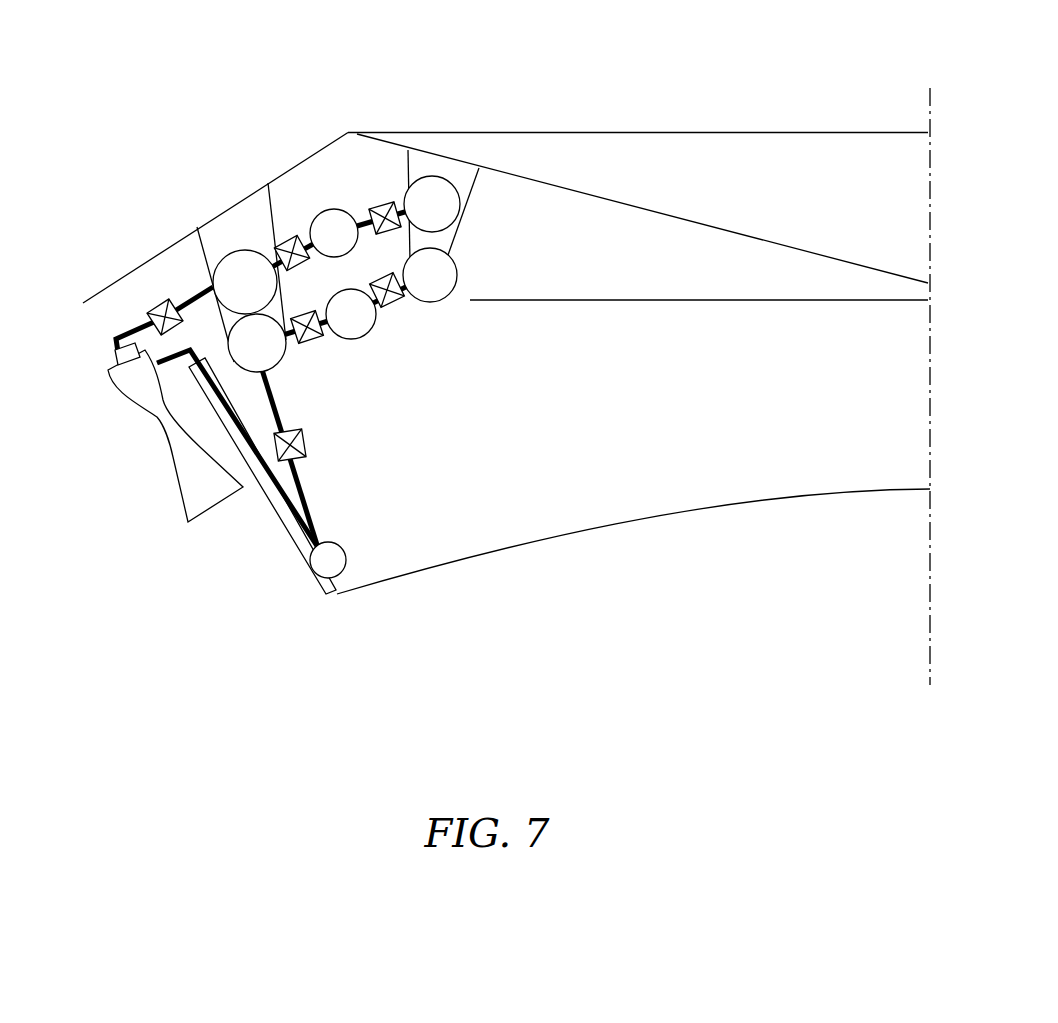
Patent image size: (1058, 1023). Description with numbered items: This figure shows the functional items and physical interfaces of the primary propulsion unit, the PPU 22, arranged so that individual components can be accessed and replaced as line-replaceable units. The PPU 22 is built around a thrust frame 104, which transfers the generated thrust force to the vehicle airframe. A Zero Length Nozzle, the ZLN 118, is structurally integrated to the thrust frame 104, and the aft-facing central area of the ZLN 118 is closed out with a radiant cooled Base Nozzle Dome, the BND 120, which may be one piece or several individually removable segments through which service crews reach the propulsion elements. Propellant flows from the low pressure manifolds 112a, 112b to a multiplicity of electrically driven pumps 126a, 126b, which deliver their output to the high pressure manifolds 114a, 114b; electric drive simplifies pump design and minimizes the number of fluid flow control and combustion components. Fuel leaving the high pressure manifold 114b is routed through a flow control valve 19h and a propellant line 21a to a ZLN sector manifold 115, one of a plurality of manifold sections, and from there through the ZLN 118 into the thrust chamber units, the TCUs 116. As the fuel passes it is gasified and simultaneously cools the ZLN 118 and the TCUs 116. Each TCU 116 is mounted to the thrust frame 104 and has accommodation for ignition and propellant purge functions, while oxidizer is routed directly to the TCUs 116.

The primary propulsion unit (PPU) 22 is at (172, 240).
The thrust frame 104 is at (605, 123).
The low pressure manifold 112a is at (432, 204).
The low pressure manifold 112b is at (430, 275).
The high pressure manifold 114a is at (245, 282).
The high pressure manifold 114b is at (257, 343).
The electrically driven pump 126a is at (334, 233).
The electrically driven pump 126b is at (351, 314).
The thrust chamber unit (TCU) 116 is at (187, 462).
The Zero Length Nozzle (ZLN) 118 is at (260, 492).
The Base Nozzle Dome (BND) 120 is at (113, 352).
The propellant line 21a is at (283, 527).
The flow control valve 19h is at (308, 440).
The ZLN sector manifold 115 is at (313, 573).